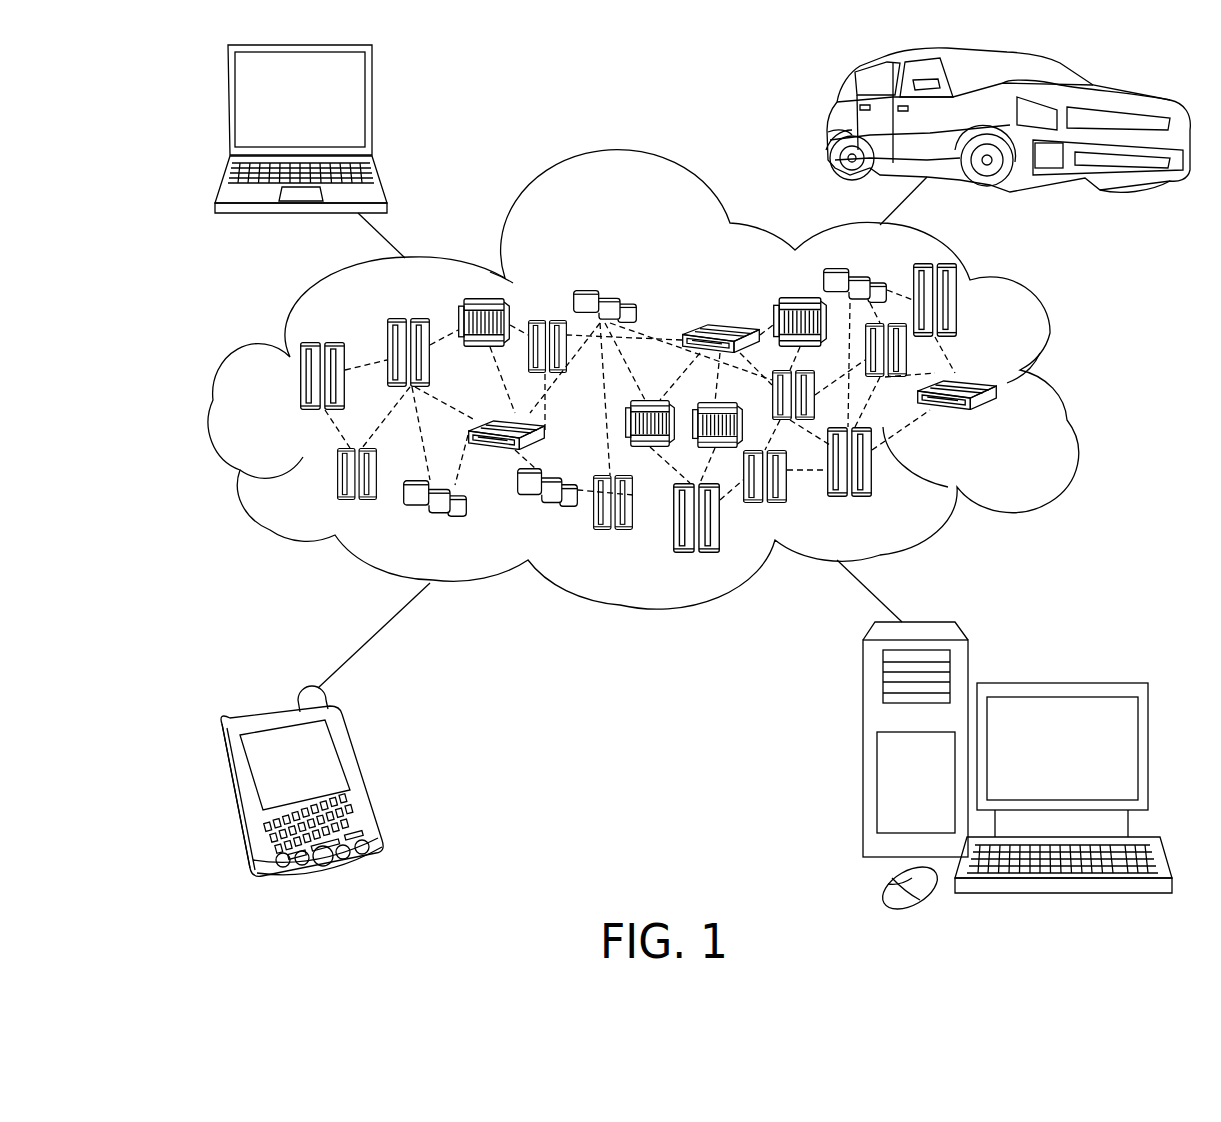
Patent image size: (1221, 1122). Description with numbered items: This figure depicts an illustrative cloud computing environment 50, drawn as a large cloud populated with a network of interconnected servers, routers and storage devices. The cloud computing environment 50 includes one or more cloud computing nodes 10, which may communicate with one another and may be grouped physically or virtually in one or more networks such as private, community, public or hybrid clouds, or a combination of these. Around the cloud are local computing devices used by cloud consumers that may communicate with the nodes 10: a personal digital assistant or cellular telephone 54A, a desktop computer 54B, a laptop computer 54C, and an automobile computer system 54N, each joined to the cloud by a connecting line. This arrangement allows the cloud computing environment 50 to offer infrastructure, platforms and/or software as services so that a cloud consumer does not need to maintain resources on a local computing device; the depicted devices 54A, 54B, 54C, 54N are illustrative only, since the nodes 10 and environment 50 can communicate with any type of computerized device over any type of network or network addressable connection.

The cloud computing node 10 is at (1000, 418).
The cloud computing environment 50 is at (1063, 387).
The personal digital assistant or cellular telephone 54A is at (363, 777).
The desktop computer 54B is at (1058, 682).
The laptop computer 54C is at (372, 107).
The automobile computer system 54N is at (835, 128).